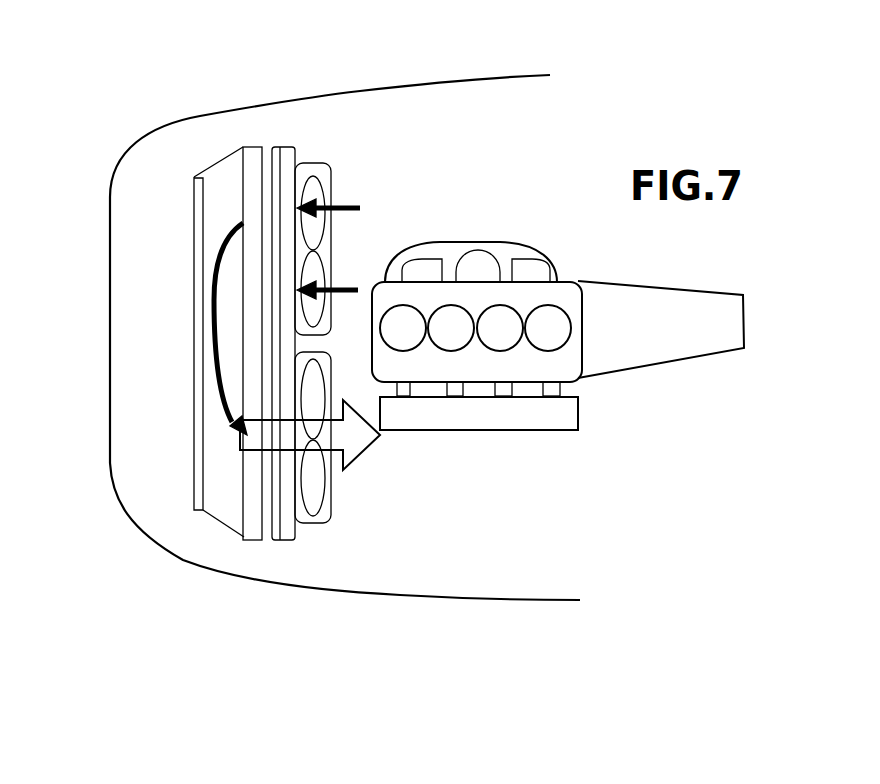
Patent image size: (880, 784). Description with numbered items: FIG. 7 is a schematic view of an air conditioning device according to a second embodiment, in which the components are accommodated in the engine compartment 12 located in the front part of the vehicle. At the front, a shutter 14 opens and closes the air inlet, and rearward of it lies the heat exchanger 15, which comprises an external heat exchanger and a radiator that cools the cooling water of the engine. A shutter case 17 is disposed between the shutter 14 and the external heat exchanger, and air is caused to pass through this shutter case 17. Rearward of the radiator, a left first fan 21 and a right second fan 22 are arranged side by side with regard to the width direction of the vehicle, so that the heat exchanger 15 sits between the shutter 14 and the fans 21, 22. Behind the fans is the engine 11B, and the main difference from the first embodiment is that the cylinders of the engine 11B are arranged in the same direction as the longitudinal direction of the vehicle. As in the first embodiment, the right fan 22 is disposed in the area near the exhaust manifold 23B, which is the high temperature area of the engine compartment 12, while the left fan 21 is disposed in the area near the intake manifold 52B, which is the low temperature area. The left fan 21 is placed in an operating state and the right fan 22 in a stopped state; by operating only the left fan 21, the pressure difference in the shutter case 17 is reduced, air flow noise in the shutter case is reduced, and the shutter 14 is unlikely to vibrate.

The engine compartment 12 is at (485, 598).
The shutter 14 is at (200, 345).
The shutter case 17 is at (220, 527).
The heat exchanger 15 is at (268, 548).
The right second fan 22 is at (315, 163).
The left first fan 21 is at (318, 510).
The engine 11B is at (525, 280).
The exhaust manifold 23B is at (442, 250).
The intake manifold 52B is at (425, 417).